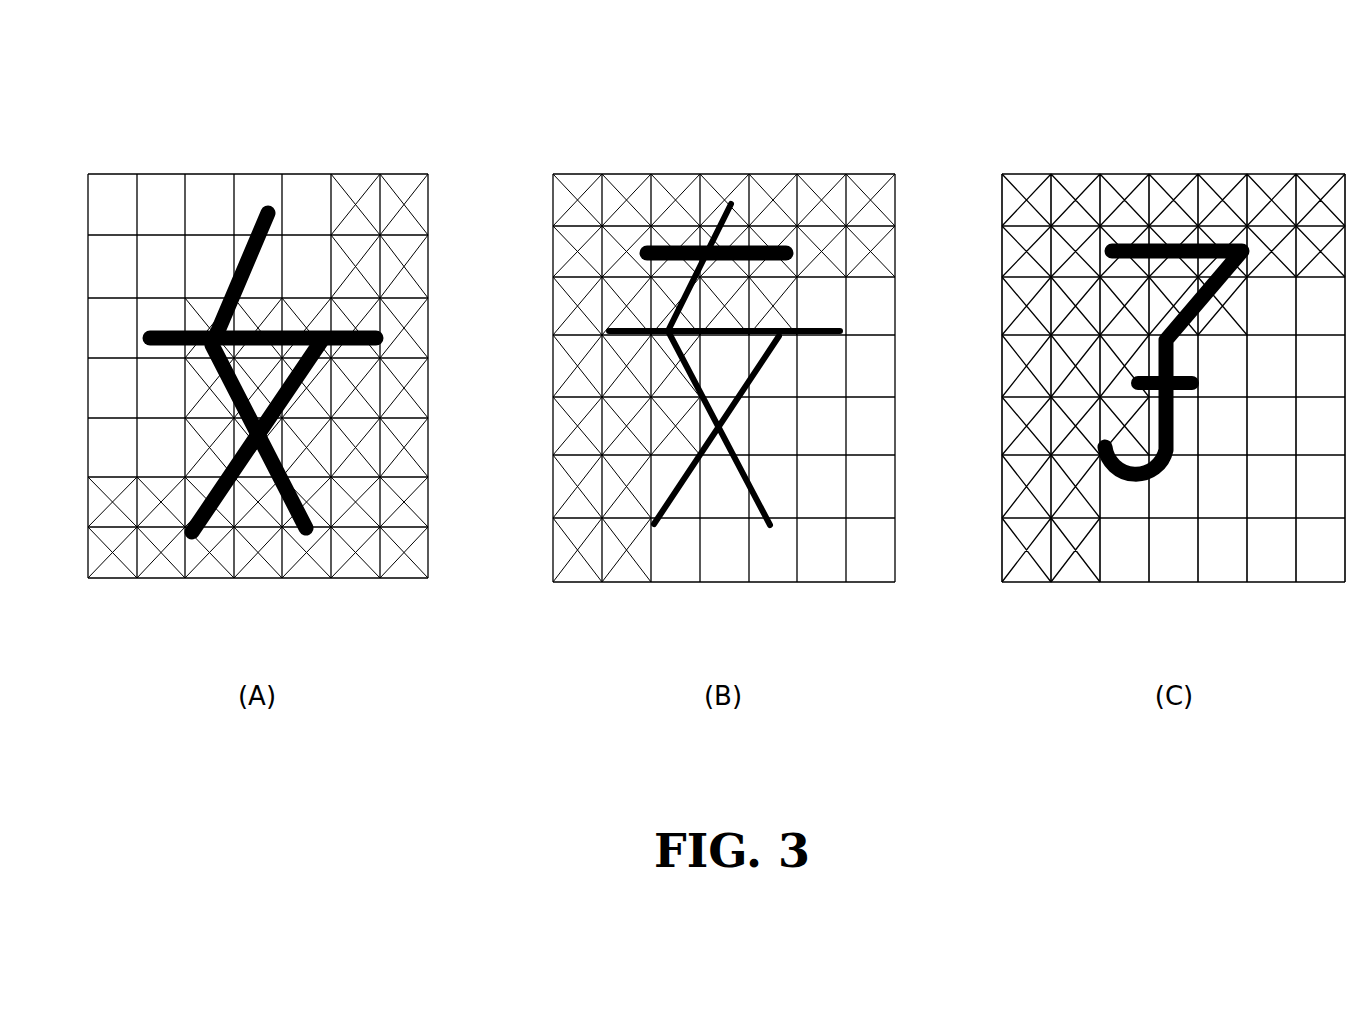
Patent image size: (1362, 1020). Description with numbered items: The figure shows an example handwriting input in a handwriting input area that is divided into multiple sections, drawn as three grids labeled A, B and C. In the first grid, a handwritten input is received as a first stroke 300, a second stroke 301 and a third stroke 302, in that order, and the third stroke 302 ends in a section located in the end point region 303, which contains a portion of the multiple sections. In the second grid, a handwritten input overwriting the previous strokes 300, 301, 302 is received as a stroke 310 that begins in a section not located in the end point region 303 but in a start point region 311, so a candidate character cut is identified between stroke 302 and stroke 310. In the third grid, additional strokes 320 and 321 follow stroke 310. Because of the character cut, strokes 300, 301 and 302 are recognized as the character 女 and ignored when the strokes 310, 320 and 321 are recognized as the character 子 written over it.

The first stroke 300 is at (212, 400).
The second stroke 301 is at (238, 513).
The third stroke 302 is at (369, 364).
The end point region 303 is at (405, 175).
The stroke 310 is at (680, 227).
The start point region 311 is at (819, 173).
The stroke 320 is at (1195, 414).
The stroke 321 is at (1224, 318).